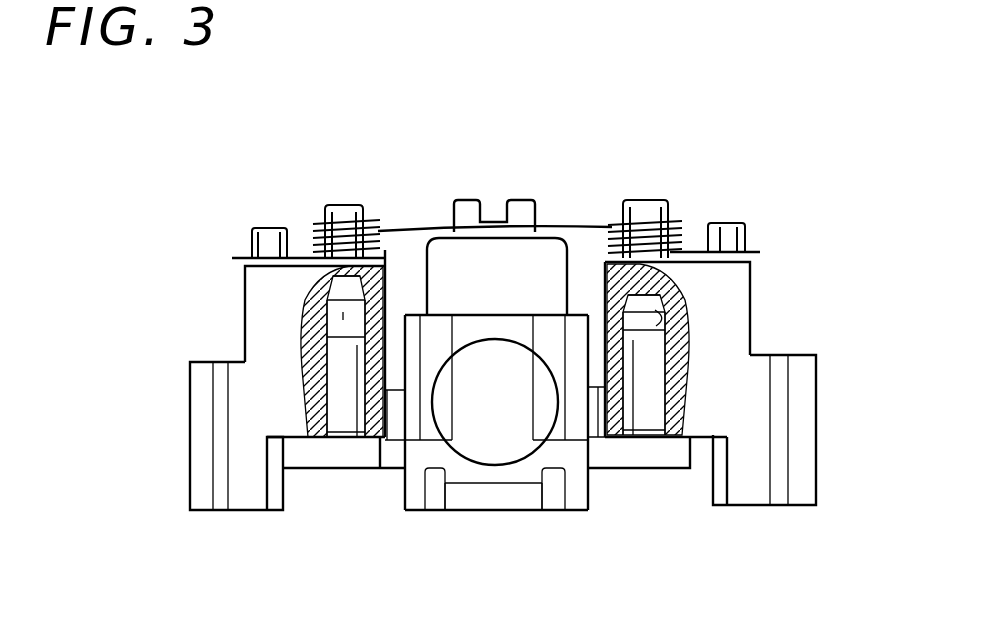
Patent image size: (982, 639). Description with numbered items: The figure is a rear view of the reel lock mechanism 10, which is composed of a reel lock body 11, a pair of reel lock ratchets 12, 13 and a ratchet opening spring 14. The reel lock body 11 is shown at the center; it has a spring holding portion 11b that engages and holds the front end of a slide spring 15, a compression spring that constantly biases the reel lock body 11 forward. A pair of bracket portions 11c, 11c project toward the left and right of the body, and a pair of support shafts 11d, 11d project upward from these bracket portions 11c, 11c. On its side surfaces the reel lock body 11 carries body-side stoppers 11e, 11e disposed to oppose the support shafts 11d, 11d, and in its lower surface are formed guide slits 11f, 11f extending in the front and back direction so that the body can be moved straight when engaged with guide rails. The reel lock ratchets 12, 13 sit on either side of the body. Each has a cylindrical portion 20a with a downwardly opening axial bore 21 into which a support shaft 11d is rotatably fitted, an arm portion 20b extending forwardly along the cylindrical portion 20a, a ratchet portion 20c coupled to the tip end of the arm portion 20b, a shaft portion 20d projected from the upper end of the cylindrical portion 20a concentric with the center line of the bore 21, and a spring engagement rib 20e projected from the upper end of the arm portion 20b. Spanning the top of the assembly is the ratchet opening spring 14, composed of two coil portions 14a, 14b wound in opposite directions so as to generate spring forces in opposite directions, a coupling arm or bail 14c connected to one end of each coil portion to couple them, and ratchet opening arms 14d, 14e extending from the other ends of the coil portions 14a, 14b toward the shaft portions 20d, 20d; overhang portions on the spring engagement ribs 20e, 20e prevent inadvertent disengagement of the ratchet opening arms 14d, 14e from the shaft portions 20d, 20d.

The reel lock mechanism 10 is at (492, 178).
The reel lock body 11 is at (572, 265).
The spring holding portion 11b is at (493, 490).
The bracket portions 11c is at (323, 480).
The support shafts 11d is at (343, 412).
The body-side stoppers 11e is at (398, 418).
The guide slits 11f is at (433, 493).
The reel lock ratchet 12 is at (238, 285).
The reel lock ratchet 13 is at (762, 318).
The ratchet opening spring 14 is at (565, 212).
The coil portion 14a is at (318, 235).
The coil portion 14b is at (675, 225).
The coupling arm or bail 14c is at (450, 218).
The ratchet opening arm 14d is at (236, 254).
The ratchet opening arm 14e is at (756, 250).
The slide spring 15 is at (527, 483).
The cylindrical portions 20a is at (385, 265).
The arm portions 20b is at (267, 338).
The ratchet portions 20c is at (205, 428).
The shaft portions 20d is at (347, 205).
The spring engagement ribs 20e is at (252, 228).
The axial bores 21 is at (320, 315).